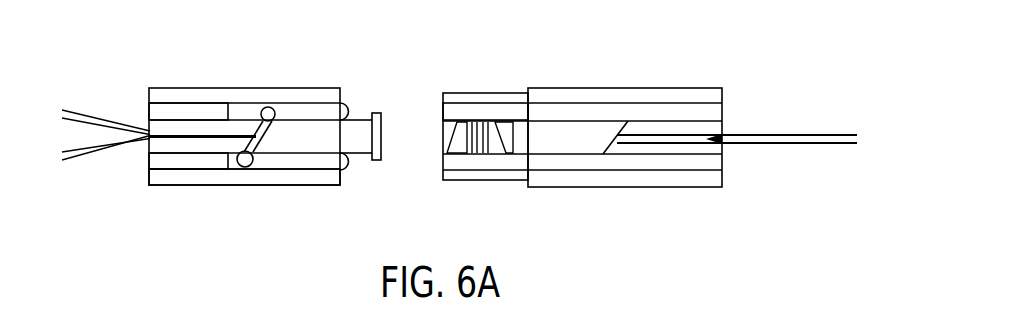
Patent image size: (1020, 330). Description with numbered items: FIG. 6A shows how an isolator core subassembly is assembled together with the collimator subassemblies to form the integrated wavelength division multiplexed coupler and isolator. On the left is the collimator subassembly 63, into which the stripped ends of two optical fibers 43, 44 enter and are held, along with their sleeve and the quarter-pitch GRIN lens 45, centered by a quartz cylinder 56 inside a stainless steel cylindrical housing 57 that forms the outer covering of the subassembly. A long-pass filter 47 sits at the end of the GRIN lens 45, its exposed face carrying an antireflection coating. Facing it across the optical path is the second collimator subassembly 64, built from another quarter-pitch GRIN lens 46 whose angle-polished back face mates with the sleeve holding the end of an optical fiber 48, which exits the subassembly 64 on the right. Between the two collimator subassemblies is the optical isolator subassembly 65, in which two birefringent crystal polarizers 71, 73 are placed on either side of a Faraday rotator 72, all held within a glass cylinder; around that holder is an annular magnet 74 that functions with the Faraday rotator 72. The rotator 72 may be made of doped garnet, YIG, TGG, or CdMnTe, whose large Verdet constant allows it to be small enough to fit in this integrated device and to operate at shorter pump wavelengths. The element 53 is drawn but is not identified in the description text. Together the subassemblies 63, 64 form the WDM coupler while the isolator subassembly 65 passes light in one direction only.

The optical fiber 43 is at (78, 108).
The optical fiber 44 is at (73, 160).
The GRIN lens 45 is at (352, 114).
The GRIN lens 46 is at (547, 142).
The long-pass filter 47 is at (376, 162).
The optical fiber 48 is at (785, 138).
The upper substrate layer 53 is at (150, 112).
The quartz cylinder 56 is at (147, 150).
The cylindrical housing 57 is at (250, 176).
The collimator subassembly 63 is at (310, 135).
The second collimator subassembly 64 is at (625, 121).
The optical isolator subassembly 65 is at (466, 139).
The birefringent crystal polarizer 71 is at (461, 137).
The Faraday rotator 72 is at (480, 147).
The birefringent crystal polarizer 73 is at (490, 128).
The annular magnet 74 is at (507, 148).